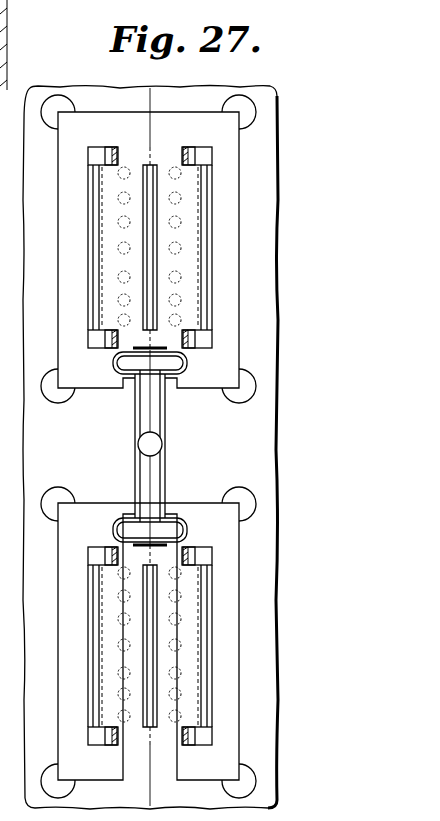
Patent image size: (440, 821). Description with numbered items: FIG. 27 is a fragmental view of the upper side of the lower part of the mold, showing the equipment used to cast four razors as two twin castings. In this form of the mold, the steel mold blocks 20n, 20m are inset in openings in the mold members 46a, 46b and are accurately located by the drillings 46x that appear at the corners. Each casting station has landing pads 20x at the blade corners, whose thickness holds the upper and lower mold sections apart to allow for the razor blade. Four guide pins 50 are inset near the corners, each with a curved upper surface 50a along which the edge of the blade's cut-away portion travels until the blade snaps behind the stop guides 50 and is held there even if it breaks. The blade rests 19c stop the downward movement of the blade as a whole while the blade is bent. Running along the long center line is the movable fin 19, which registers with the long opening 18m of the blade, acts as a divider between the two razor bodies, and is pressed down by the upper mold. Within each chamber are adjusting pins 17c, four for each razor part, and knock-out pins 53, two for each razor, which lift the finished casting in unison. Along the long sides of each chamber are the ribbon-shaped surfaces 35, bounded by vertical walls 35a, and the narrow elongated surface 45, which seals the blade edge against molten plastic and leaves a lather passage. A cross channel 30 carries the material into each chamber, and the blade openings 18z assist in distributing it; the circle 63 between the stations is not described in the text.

The drillings 46x is at (60, 96).
The mold member 46b is at (101, 91).
The mold member 46a is at (212, 92).
The landing pads 20x is at (97, 147).
The guide pins 50 is at (110, 147).
The curved upper surface 50a is at (115, 152).
The adjusting pins 17c is at (125, 168).
The blade rests 19c is at (153, 157).
The vertical walls 35a is at (212, 181).
The ribbon-shaped surfaces 35 is at (207, 198).
The elongated surface 45 is at (99, 252).
The knock-out pins 53 is at (126, 194).
The openings 18z is at (127, 254).
The long opening 18m is at (157, 265).
The movable fin 19 is at (149, 625).
The steel mold block 20n is at (68, 275).
The steel mold block 20m is at (230, 278).
The cross channel 30 is at (118, 356).
The pivot circle 63 is at (162, 446).